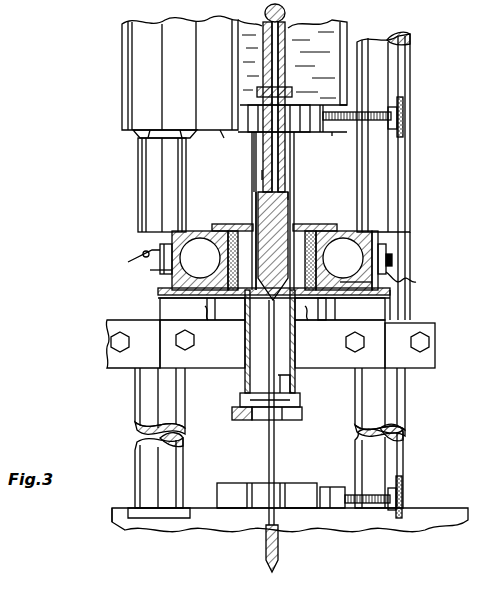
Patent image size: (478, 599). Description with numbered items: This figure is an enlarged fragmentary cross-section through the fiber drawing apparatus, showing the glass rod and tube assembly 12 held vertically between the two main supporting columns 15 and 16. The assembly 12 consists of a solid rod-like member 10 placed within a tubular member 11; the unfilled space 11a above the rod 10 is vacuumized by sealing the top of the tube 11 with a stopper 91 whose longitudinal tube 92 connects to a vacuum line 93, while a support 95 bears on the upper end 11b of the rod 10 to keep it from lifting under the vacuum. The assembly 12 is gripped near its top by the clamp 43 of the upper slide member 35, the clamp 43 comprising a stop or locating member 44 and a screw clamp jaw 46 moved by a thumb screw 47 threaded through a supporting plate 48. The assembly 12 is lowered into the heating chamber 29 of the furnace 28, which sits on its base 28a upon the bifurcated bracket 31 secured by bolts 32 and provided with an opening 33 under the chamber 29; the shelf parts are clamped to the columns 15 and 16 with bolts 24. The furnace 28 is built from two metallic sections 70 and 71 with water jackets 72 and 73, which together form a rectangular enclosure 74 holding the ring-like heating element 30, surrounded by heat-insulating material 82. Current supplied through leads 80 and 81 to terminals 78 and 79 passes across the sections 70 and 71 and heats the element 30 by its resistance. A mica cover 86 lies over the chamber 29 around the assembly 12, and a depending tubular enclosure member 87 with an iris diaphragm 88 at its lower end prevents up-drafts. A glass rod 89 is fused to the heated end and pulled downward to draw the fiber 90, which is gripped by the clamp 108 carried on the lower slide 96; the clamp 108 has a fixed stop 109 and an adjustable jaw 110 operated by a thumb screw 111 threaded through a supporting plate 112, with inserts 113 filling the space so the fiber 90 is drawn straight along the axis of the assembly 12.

The solid rod-like member 10 is at (290, 214).
The tubular member 11 is at (258, 166).
The unfilled space 11a is at (257, 148).
The upper end of the glass rod 11b is at (258, 196).
The assembly 12 is at (290, 196).
The main supporting column 15 is at (138, 165).
The main supporting column 16 is at (410, 50).
The bolts 24 is at (107, 342).
The furnace 28 is at (380, 233).
The base of the furnace 28a is at (160, 292).
The heating chamber 29 is at (214, 292).
The heating element 30 is at (318, 232).
The bracket 31 is at (378, 310).
The bolts 32 is at (186, 346).
The opening 33 is at (210, 320).
The upper slide member 35 is at (121, 55).
The clamp 43 is at (336, 134).
The stop or locating member 44 is at (224, 139).
The screw clamp jaw 46 is at (306, 112).
The thumb screw 47 is at (404, 112).
The supporting plate 48 is at (340, 114).
The furnace section 70 is at (362, 280).
The furnace section 71 is at (172, 234).
The water jacket 72 is at (386, 252).
The water jacket 73 is at (160, 270).
The rectangular enclosure 74 is at (328, 296).
The electrical terminal 78 is at (392, 260).
The electrical terminal 79 is at (160, 246).
The lead 80 is at (416, 282).
The lead 81 is at (130, 262).
The heat-insulating material 82 is at (232, 230).
The cover 86 is at (216, 226).
The tubular enclosure member 87 is at (244, 380).
The iris diaphragm 88 is at (250, 418).
The glass rod 89 is at (278, 550).
The fiber 90 is at (274, 448).
The stopper 91 is at (285, 88).
The tube 92 is at (258, 92).
The vacuum line 93 is at (285, 14).
The support 95 is at (262, 176).
The lower slide 96 is at (110, 524).
The clamp 108 is at (330, 532).
The fixed stop 109 is at (228, 500).
The adjustable jaw 110 is at (302, 506).
The thumb screw 111 is at (402, 486).
The supporting plate 112 is at (334, 490).
The inserts 113 is at (280, 490).